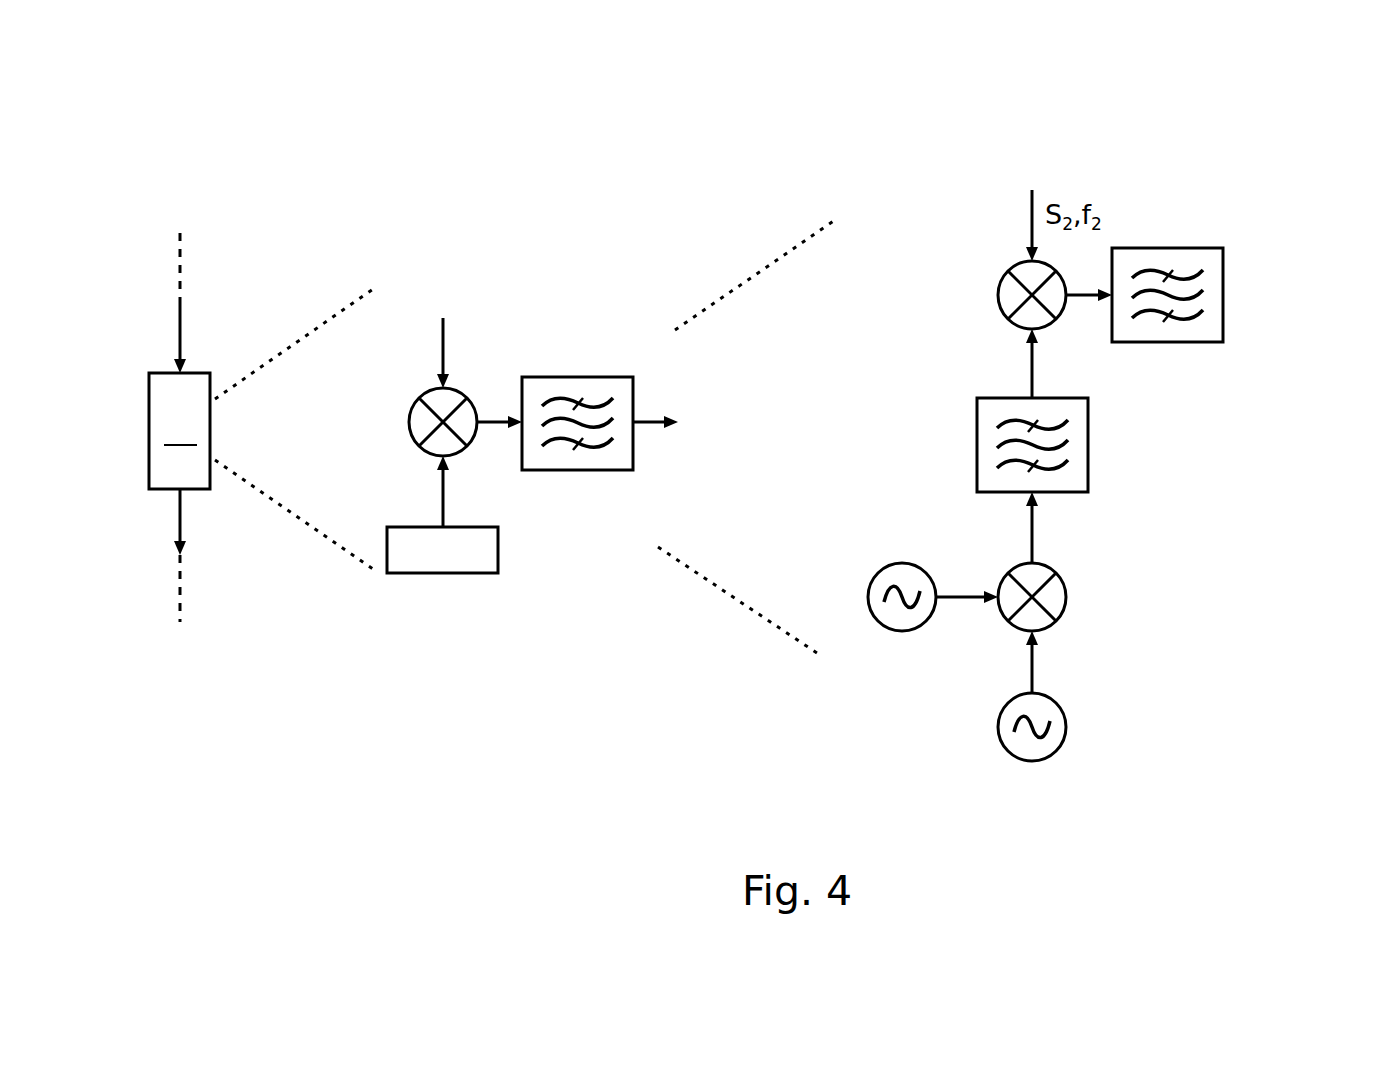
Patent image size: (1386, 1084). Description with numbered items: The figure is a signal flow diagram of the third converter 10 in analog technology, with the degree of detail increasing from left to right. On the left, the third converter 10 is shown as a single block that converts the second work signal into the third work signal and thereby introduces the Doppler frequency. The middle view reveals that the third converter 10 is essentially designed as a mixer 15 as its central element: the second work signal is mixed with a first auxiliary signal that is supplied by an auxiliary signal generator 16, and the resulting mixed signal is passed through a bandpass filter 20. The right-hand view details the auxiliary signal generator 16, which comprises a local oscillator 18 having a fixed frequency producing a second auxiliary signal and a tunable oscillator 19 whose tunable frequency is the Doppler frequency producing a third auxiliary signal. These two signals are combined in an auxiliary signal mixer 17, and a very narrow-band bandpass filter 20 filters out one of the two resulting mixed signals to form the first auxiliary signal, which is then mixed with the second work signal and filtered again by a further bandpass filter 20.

The third converter 10 is at (797, 139).
The mixer 15 is at (409, 423).
The auxiliary signal generator 16 is at (453, 573).
The auxiliary signal mixer 17 is at (1067, 610).
The local oscillator 18 is at (888, 563).
The tunable oscillator 19 is at (1067, 727).
The bandpass filter 20 is at (577, 377).